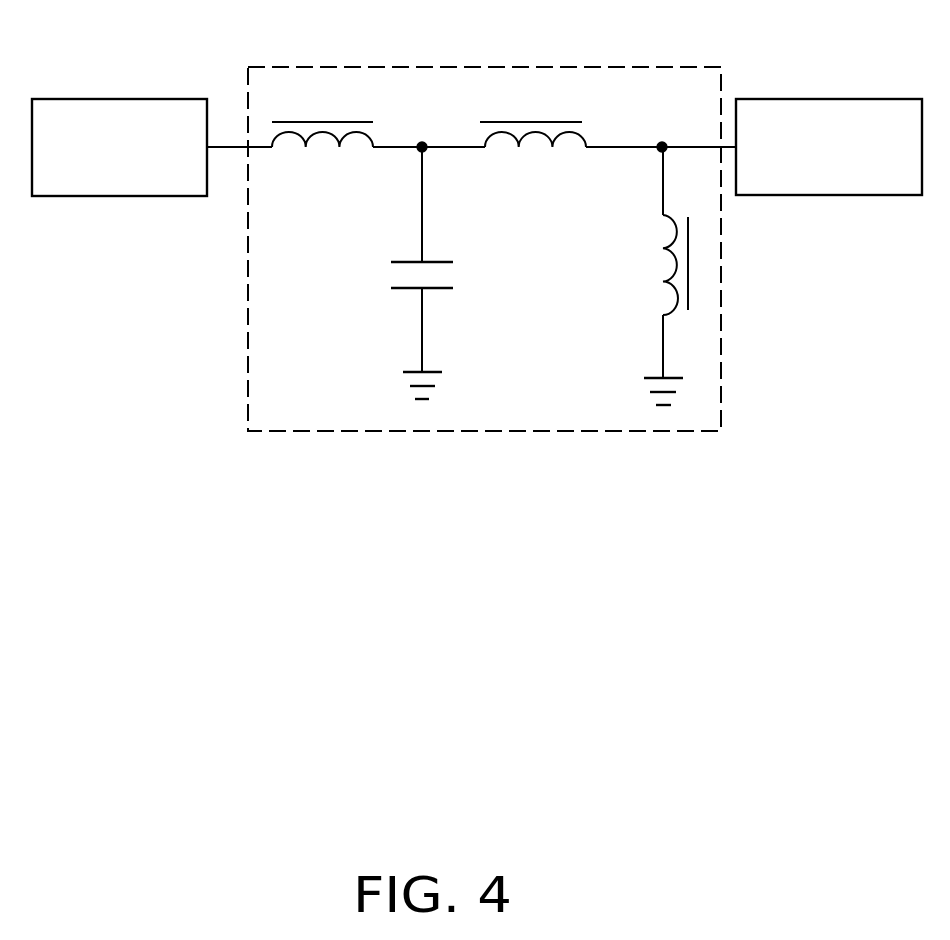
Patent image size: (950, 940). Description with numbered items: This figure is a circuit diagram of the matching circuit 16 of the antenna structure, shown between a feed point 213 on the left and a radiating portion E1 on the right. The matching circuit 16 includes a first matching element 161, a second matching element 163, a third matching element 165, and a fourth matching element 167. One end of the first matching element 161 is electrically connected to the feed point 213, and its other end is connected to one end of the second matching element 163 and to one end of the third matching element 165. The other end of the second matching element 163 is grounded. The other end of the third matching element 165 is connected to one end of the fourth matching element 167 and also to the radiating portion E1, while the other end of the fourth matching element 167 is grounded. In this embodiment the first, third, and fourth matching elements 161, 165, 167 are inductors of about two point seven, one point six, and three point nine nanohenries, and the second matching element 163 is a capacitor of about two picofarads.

The feed point 213 is at (119, 99).
The matching circuit 16 is at (484, 67).
The first matching element 161 is at (323, 133).
The second matching element 163 is at (407, 288).
The third matching element 165 is at (543, 133).
The fourth matching element 167 is at (666, 299).
The radiating portion E1 is at (793, 99).